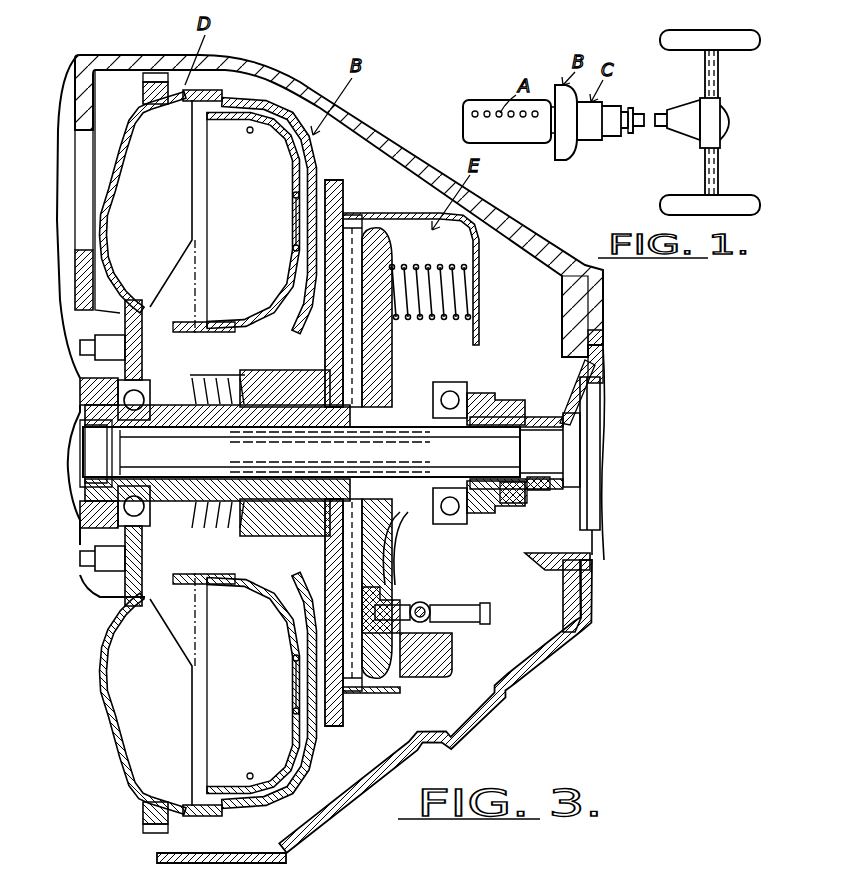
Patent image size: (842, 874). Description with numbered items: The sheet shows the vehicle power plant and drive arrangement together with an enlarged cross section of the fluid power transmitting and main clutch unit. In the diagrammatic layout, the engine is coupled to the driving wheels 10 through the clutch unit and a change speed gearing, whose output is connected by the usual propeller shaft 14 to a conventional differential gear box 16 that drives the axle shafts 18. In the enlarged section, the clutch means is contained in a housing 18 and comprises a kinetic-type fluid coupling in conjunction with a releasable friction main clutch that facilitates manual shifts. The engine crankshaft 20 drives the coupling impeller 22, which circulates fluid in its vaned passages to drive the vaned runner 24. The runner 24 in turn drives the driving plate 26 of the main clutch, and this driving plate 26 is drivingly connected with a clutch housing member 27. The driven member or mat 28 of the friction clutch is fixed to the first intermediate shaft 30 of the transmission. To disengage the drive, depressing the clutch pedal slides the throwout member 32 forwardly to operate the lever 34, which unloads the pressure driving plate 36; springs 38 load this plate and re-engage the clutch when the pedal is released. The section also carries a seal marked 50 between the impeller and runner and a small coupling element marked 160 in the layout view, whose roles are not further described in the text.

In FIG. 1, the driving wheels 10 is at (745, 33).
In FIG. 1, the propeller shaft 14 is at (658, 117).
In FIG. 1, the differential gear box 16 is at (722, 115).
In FIG. 3, the axle shafts / housing 18 is at (266, 59).
In FIG. 1, the axle shafts / housing 18 is at (720, 64).
In FIG. 3, the engine crankshaft 20 is at (78, 400).
In FIG. 3, the coupling impeller 22 is at (162, 203).
In FIG. 3, the vaned runner 24 is at (262, 219).
In FIG. 3, the driving plate 26 is at (328, 181).
In FIG. 3, the clutch housing member 27 is at (400, 212).
In FIG. 3, the driven member (mat) 28 is at (355, 226).
In FIG. 3, the first intermediate shaft 30 is at (496, 461).
In FIG. 3, the throwout member 32 is at (487, 395).
In FIG. 3, the lever 34 is at (452, 560).
In FIG. 3, the pressure driving plate 36 is at (424, 680).
In FIG. 3, the springs 38 is at (470, 262).
In FIG. 3, the seal 50 is at (205, 372).
In FIG. 1, the coupling 160 is at (629, 107).